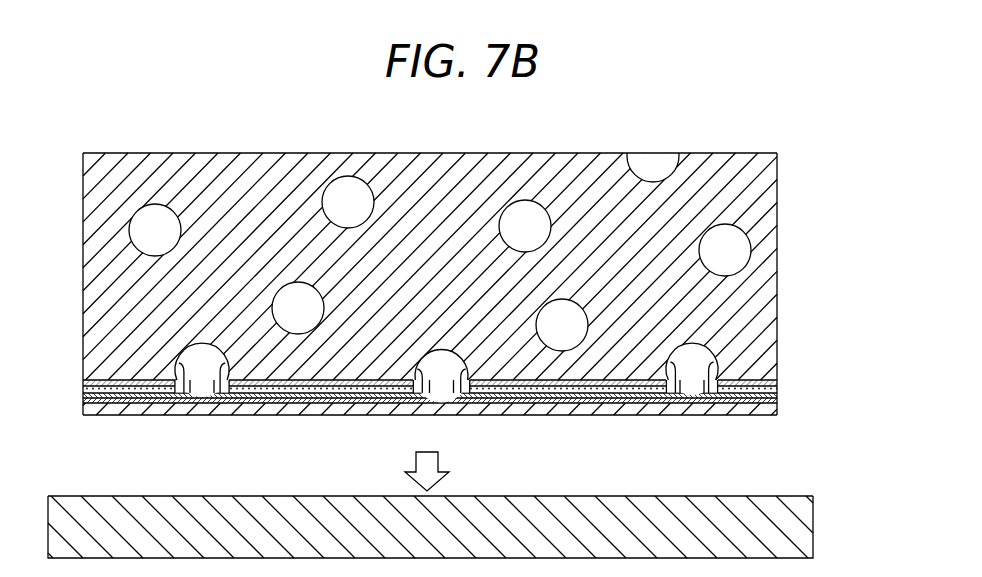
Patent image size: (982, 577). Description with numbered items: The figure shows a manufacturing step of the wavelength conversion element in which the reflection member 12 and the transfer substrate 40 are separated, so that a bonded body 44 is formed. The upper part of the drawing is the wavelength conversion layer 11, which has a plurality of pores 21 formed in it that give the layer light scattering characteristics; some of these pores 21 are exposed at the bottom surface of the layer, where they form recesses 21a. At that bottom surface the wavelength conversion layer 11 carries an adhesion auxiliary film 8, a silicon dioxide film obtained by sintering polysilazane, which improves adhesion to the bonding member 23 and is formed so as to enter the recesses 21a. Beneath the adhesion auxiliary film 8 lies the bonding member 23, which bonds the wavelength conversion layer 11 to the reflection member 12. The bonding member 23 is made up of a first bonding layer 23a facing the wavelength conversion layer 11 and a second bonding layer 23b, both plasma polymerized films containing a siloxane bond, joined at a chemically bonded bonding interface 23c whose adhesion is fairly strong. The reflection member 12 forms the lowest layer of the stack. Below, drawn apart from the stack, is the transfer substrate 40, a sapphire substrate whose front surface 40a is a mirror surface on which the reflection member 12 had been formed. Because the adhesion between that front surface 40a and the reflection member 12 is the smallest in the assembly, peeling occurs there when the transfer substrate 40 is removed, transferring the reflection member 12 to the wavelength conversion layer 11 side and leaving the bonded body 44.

The bonded body 44 is at (464, 296).
The wavelength conversion layer 11 is at (465, 261).
The pores 21 is at (348, 228).
The recesses 21a is at (183, 357).
The adhesion auxiliary film 8 is at (778, 381).
The bonding member 23 is at (490, 391).
The first bonding layer 23a is at (778, 386).
The bonding interface 23c is at (778, 393).
The second bonding layer 23b is at (468, 419).
The reflection member 12 is at (777, 410).
The transfer substrate 40 is at (455, 507).
The front surface 40a is at (83, 496).